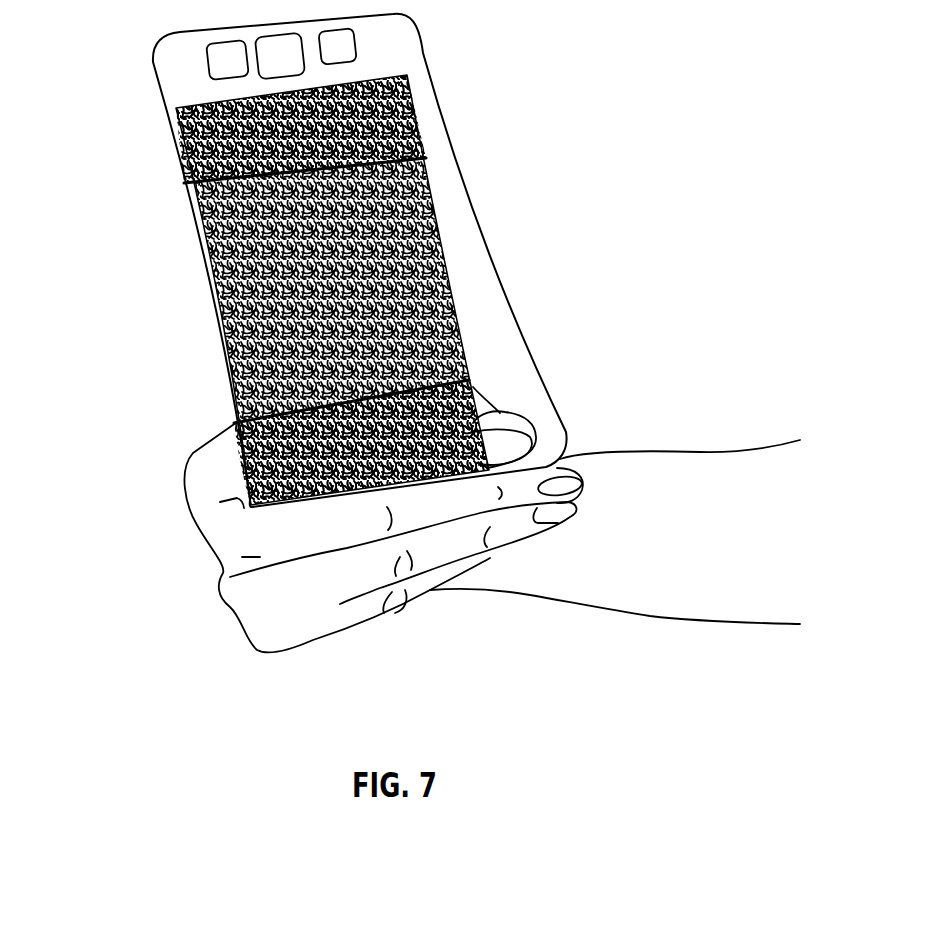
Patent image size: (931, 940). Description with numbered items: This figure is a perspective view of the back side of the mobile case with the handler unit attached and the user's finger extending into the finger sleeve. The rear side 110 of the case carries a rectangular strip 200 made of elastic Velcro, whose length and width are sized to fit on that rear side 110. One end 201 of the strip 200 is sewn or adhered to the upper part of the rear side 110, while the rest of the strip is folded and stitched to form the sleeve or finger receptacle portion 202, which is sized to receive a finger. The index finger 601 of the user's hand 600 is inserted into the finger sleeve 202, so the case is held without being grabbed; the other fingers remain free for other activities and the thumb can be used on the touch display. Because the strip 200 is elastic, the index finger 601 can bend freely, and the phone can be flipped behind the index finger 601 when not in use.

The rear side of the mobile case 110 is at (183, 77).
The rectangular strip 200 is at (306, 290).
The first strip end 201 is at (183, 152).
The finger sleeve 202 is at (237, 441).
The user's hand 600 is at (492, 478).
The index finger 601 is at (512, 442).